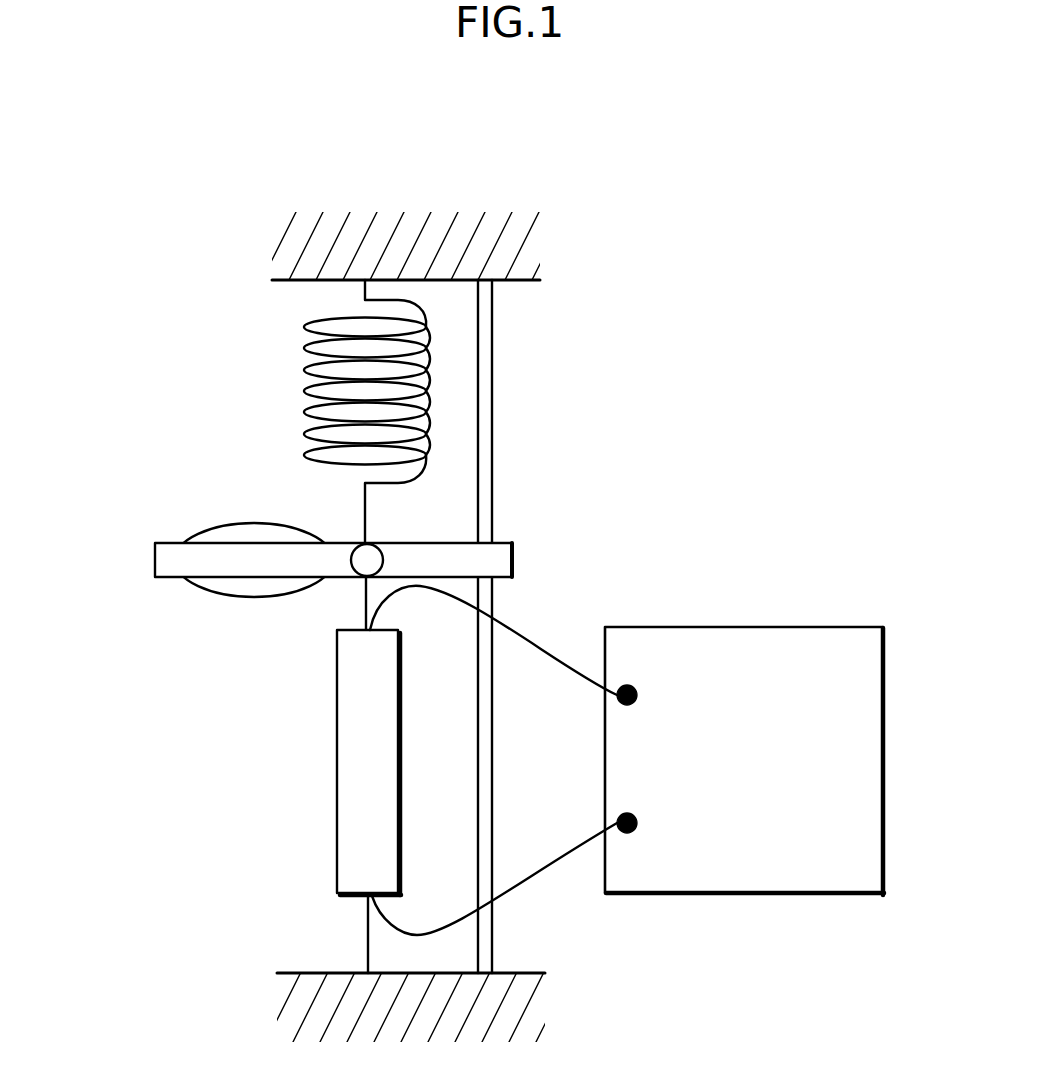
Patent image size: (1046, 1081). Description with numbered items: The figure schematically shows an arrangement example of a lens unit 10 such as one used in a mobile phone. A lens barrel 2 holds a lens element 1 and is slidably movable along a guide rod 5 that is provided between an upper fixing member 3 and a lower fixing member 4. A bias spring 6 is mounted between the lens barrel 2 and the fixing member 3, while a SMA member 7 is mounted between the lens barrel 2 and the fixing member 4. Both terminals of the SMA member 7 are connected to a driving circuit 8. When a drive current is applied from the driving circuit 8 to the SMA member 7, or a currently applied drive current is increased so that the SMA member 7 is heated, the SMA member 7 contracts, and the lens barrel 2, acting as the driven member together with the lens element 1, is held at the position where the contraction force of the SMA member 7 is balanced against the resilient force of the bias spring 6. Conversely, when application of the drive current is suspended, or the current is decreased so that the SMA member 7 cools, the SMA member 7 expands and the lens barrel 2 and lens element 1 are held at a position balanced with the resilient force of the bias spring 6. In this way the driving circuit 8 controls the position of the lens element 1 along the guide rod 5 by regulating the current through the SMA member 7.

The lens unit 10 is at (153, 180).
The lens element 1 is at (217, 527).
The lens barrel 2 is at (160, 553).
The fixing member 3 is at (288, 245).
The fixing member 4 is at (292, 1003).
The guide rod 5 is at (493, 425).
The bias spring 6 is at (305, 383).
The SMA member 7 is at (337, 725).
The driving circuit 8 is at (870, 731).